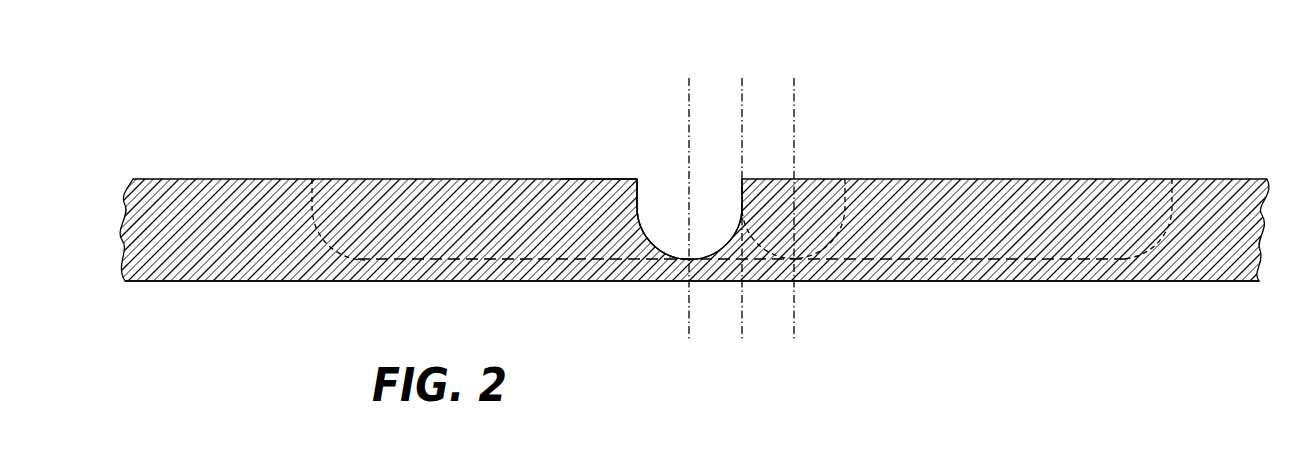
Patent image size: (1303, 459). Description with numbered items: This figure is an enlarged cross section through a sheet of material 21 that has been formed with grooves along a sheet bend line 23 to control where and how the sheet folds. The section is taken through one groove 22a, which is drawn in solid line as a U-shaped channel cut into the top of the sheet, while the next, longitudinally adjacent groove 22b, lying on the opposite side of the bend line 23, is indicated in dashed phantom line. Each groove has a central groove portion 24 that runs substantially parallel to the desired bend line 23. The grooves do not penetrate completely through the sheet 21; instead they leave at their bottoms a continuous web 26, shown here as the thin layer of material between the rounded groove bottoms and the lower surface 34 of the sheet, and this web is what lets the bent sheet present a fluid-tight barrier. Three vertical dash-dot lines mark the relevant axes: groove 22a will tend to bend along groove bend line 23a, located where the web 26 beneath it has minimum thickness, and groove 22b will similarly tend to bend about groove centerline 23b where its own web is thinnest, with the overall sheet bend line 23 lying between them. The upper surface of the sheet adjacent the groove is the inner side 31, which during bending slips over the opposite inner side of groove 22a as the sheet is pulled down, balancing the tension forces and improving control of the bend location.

The sheet of material 21 is at (176, 178).
The bottom surface 34 is at (244, 283).
The groove 22a is at (665, 207).
The groove 22b is at (836, 178).
The central groove portion 24 is at (642, 196).
The inner side of the sheet 31 is at (629, 178).
The web 26 is at (673, 283).
The sheet bend line 23 is at (740, 92).
The groove bend line 23a is at (686, 92).
The groove centerline 23b is at (797, 92).